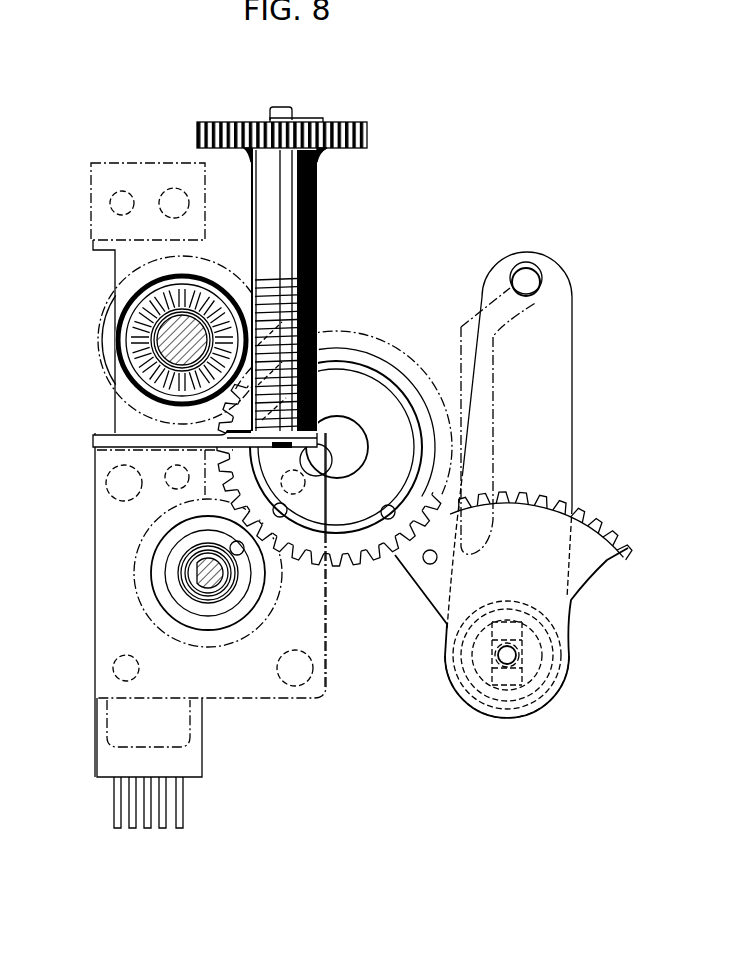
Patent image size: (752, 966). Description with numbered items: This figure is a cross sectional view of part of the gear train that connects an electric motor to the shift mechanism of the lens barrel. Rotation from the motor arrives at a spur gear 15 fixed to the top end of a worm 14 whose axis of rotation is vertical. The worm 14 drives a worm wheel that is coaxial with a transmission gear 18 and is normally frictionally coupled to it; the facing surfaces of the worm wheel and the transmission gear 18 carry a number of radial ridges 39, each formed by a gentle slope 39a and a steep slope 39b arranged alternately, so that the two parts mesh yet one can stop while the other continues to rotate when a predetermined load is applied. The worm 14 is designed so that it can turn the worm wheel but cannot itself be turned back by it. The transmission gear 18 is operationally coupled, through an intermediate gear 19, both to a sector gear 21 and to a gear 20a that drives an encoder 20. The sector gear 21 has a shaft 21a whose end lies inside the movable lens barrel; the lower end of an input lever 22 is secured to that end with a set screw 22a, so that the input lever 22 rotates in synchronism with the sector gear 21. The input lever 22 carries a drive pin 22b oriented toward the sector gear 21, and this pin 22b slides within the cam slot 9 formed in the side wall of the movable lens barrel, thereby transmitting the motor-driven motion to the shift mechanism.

The cam slot 9 is at (463, 328).
The worm 14 is at (317, 220).
The spur gear 15 is at (345, 122).
The transmission gear 18 is at (100, 343).
The intermediate gear 19 is at (378, 330).
The encoder 20 is at (260, 685).
The gear 20a is at (134, 582).
The sector gear 21 is at (597, 567).
The shaft 21a is at (518, 655).
The input lever 22 is at (563, 373).
The set screw 22a is at (480, 677).
The drive pin 22b is at (533, 284).
The radial ridges 39 is at (112, 298).
The gentle slopes 39a is at (116, 286).
The steep slopes 39b is at (118, 363).